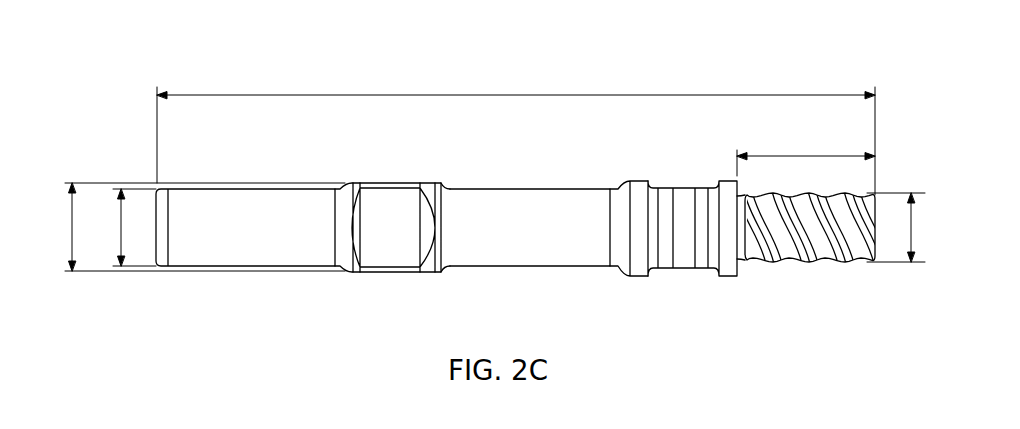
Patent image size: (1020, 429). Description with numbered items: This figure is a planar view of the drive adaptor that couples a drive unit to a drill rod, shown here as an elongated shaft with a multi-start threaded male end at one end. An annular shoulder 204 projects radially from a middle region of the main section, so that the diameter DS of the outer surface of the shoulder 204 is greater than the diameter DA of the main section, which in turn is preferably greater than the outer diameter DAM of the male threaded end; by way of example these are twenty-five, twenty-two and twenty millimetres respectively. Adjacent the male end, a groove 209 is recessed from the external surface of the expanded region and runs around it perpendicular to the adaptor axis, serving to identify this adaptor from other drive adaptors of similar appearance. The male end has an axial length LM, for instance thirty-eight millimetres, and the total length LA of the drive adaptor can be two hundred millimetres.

The annular shoulder 204 is at (397, 210).
The groove 209 is at (665, 206).
The total length LA is at (516, 131).
The axial length of the male end LM is at (806, 152).
The diameter of the shoulder DS is at (194, 227).
The diameter of the main section DA is at (124, 227).
The outer diameter of the male threaded end DAM is at (912, 227).